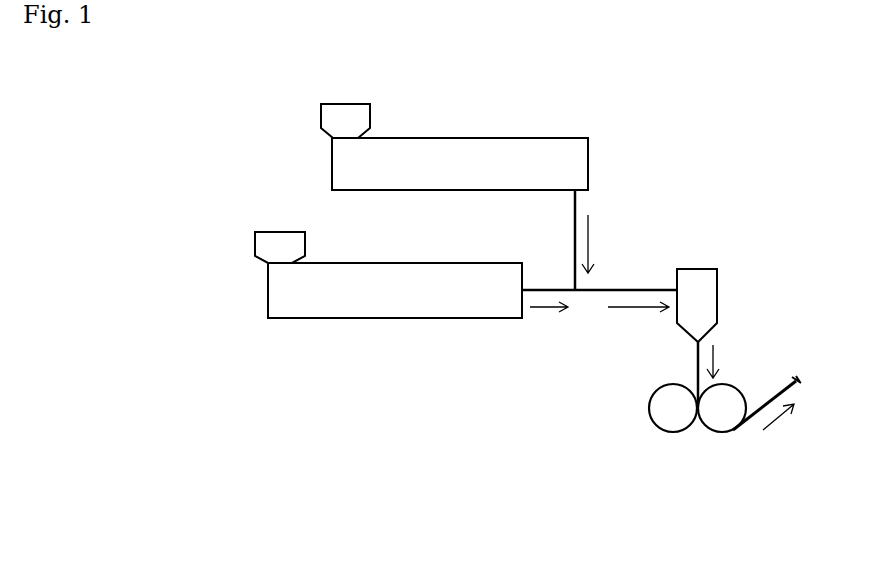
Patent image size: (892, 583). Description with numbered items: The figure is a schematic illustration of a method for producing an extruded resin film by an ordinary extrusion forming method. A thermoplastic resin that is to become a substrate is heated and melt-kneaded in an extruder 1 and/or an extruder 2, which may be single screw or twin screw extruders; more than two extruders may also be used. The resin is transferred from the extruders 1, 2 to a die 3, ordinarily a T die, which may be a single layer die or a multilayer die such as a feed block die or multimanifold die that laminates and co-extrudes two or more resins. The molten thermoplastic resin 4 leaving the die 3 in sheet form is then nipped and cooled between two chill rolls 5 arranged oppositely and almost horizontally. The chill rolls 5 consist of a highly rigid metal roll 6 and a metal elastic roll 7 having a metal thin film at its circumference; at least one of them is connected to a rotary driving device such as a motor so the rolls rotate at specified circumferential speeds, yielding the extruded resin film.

The extruder 1 is at (310, 295).
The extruder 2 is at (352, 166).
The die 3 is at (700, 298).
The molten thermoplastic resin 4 is at (697, 363).
The chill rolls 5 is at (697, 473).
The metal roll 6 is at (720, 432).
The metal elastic roll 7 is at (669, 432).